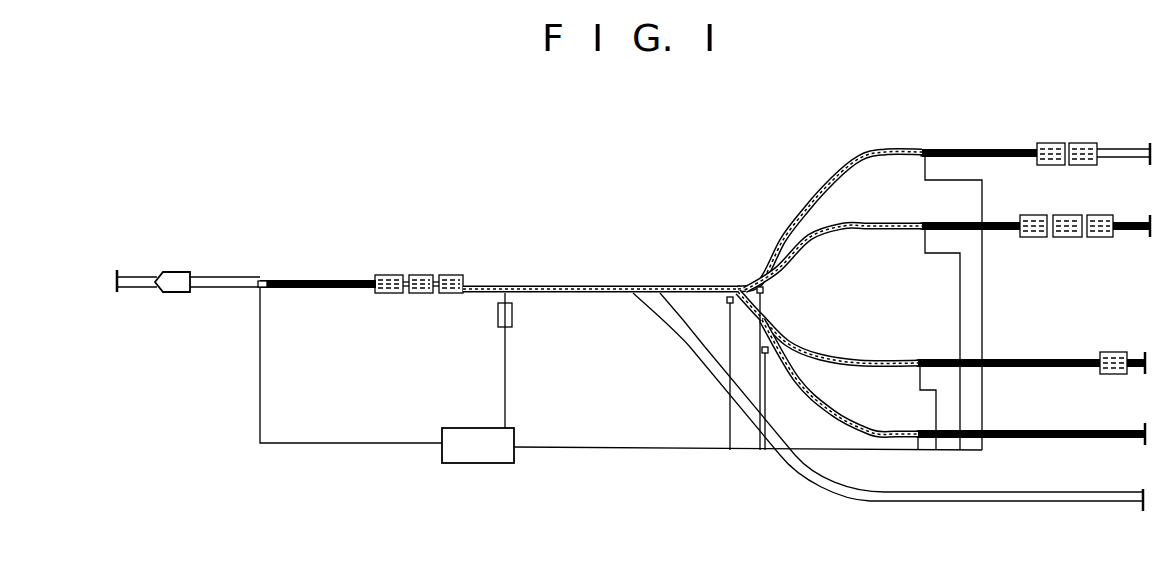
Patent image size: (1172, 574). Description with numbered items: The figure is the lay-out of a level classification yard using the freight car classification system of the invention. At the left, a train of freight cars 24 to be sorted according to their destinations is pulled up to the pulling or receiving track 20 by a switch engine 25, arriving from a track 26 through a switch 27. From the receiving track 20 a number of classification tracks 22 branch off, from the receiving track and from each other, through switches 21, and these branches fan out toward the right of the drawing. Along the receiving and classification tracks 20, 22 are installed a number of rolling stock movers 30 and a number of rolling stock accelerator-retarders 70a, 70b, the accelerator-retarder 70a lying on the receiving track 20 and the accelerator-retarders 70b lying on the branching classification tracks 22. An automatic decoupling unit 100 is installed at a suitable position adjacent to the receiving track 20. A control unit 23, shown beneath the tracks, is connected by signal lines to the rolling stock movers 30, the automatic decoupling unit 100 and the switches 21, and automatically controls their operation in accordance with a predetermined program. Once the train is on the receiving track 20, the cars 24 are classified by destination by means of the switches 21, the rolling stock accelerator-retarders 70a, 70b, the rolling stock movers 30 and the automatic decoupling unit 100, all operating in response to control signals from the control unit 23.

The pulling or receiving track 20 is at (222, 288).
The switches 21 is at (723, 288).
The classification tracks 22 is at (1125, 149).
The control unit 23 is at (482, 463).
The freight cars 24 is at (418, 275).
The switch engine 25 is at (186, 272).
The track 26 is at (928, 502).
The switch 27 is at (635, 294).
The rolling stock movers 30 is at (262, 281).
The rolling stock accelerator-retarder 70a is at (580, 285).
The rolling stock accelerator-retarders 70b is at (700, 296).
The automatic decoupling unit 100 is at (512, 316).